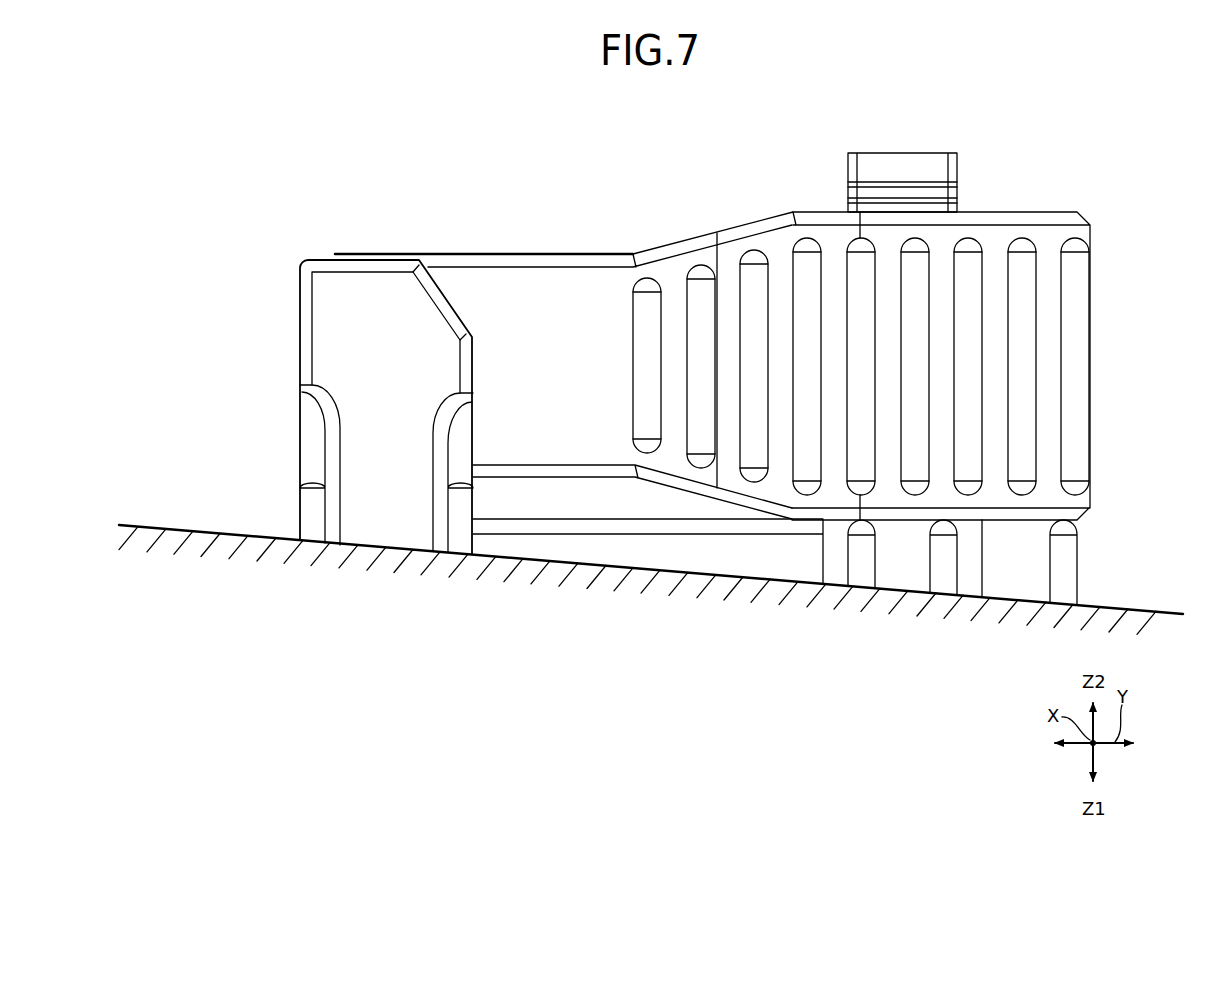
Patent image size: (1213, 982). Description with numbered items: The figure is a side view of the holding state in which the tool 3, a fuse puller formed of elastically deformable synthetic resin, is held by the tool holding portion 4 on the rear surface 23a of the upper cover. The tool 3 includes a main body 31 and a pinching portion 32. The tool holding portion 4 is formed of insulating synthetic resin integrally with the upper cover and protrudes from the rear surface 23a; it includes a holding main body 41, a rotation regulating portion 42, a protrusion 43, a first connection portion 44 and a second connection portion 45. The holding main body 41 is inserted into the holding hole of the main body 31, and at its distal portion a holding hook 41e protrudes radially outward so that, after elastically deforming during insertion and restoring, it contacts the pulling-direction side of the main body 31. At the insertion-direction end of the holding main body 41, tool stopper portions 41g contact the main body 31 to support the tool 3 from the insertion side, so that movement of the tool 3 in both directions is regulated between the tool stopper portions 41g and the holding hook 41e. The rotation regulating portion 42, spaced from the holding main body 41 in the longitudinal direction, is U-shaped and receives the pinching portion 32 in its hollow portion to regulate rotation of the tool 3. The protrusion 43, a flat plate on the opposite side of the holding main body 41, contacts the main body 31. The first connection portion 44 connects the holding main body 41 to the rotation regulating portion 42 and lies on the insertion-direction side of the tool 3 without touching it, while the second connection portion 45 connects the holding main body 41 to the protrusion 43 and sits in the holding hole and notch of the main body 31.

The tool 3 is at (712, 334).
The tool holding portion 4 is at (296, 243).
The rear surface 23a is at (162, 526).
The main body 31 is at (1047, 212).
The pinching portion 32 is at (477, 253).
The holding main body 41 is at (940, 306).
The holding hook 41e is at (940, 195).
The tool stopper portion 41g is at (938, 563).
The rotation regulating portion 42 is at (298, 348).
The protrusion 43 is at (1080, 556).
The first connection portion 44 is at (569, 518).
The second connection portion 45 is at (980, 568).